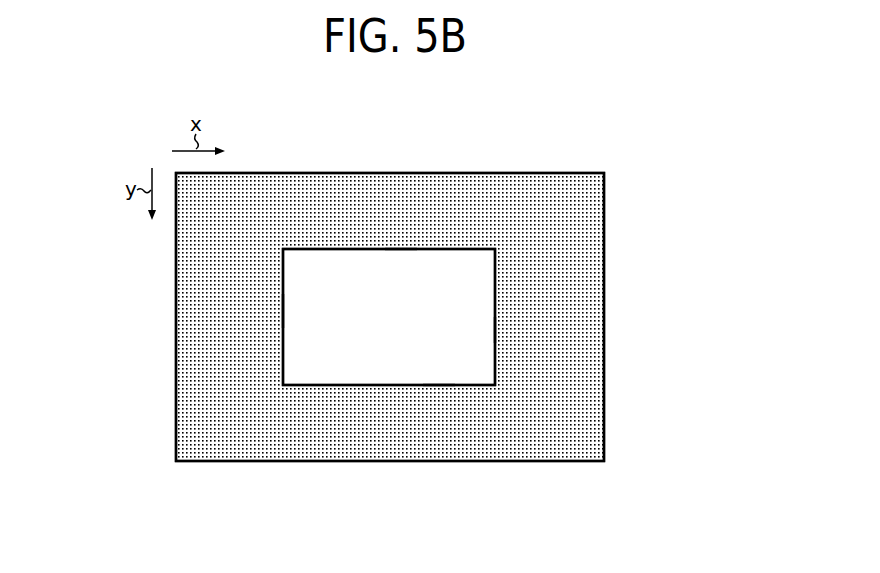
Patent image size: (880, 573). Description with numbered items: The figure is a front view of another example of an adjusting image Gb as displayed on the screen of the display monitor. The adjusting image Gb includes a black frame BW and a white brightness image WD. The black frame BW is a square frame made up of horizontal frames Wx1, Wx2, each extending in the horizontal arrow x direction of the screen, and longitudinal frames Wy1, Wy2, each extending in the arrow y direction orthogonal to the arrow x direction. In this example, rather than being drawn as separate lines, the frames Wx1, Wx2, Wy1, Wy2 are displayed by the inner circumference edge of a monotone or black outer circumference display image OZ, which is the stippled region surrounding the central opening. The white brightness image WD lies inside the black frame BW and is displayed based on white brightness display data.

The adjusting image Gb is at (488, 165).
The outer circumference display image OZ is at (563, 249).
The black frame BW is at (322, 254).
The white brightness image WD is at (358, 342).
The horizontal frame Wx1 is at (417, 249).
The horizontal frame Wx2 is at (423, 385).
The longitudinal frame Wy1 is at (283, 328).
The longitudinal frame Wy2 is at (495, 317).